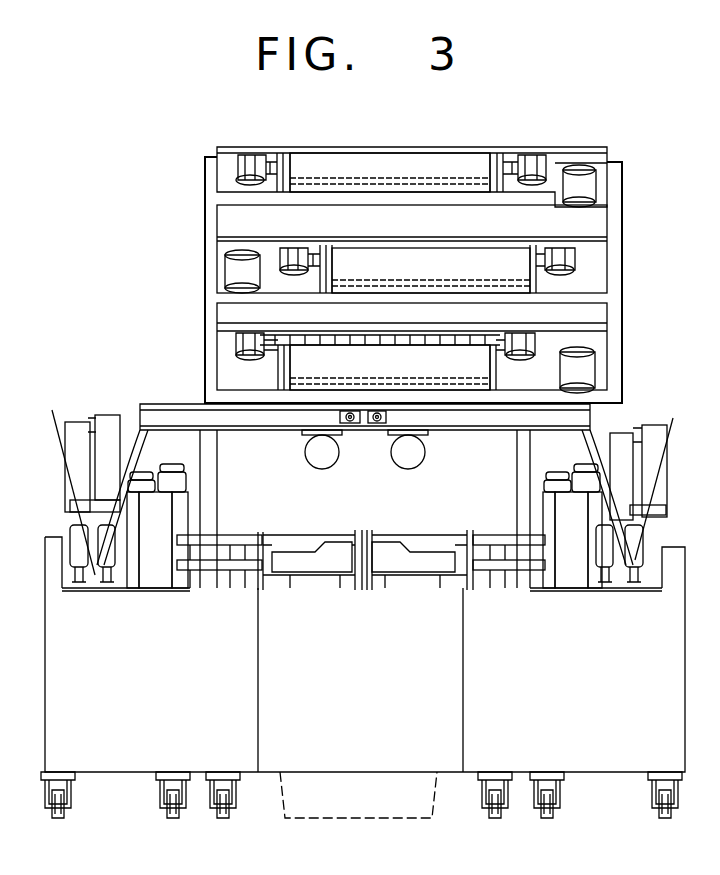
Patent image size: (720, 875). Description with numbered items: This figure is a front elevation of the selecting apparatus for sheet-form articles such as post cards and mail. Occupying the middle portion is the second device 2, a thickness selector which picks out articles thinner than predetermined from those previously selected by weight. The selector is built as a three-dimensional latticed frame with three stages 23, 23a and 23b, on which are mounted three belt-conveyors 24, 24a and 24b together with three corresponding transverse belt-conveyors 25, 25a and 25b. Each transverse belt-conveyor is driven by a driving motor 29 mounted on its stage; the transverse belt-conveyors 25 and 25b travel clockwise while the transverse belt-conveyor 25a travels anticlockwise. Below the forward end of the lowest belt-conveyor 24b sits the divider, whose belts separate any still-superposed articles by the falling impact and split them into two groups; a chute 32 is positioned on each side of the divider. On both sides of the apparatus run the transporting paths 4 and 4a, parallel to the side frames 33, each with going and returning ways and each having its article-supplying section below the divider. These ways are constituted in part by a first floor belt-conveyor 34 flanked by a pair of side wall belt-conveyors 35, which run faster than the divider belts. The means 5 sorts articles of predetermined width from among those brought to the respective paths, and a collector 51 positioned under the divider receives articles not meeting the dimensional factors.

The second device 2 is at (197, 151).
The stage 23 is at (212, 200).
The stage 23a is at (212, 297).
The stage 23b is at (212, 390).
The belt-conveyor 24 is at (372, 157).
The belt-conveyor 24a is at (380, 260).
The belt-conveyor 24b is at (392, 374).
The transverse belt-conveyor 25 is at (538, 160).
The transverse belt-conveyor 25a is at (293, 250).
The transverse belt-conveyor 25b is at (545, 338).
The driving motor 29 is at (596, 180).
The chute 32 is at (135, 457).
The sorting means 5 is at (92, 411).
The transporting path 4 is at (95, 550).
The transporting path 4a is at (635, 553).
The side wall belt-conveyor 35 is at (112, 560).
The first floor belt-conveyor 34 is at (98, 590).
The side frame 33 is at (103, 737).
The collector 51 is at (403, 800).